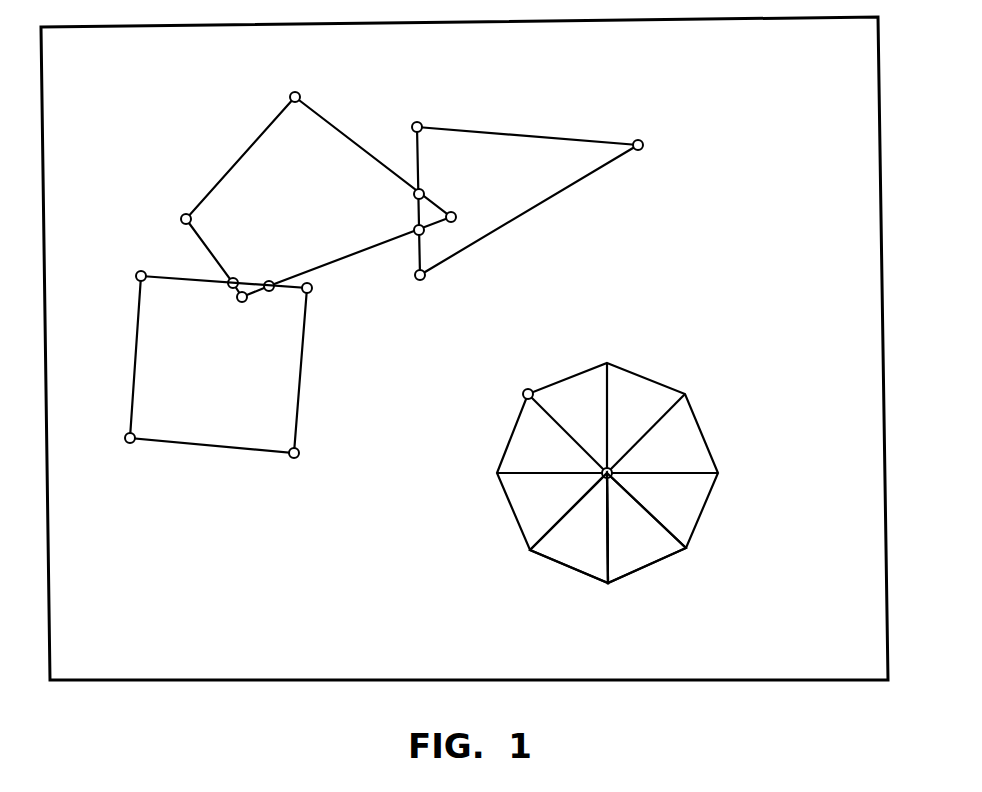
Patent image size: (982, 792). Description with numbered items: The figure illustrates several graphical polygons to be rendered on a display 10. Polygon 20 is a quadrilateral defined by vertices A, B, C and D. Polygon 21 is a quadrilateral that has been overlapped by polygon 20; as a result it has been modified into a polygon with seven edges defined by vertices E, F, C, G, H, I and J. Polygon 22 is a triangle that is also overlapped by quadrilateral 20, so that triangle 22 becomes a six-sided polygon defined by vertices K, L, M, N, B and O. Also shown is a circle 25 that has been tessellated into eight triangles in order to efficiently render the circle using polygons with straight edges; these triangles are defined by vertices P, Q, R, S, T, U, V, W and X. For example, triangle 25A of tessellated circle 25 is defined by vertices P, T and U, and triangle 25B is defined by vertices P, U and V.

The display 10 is at (745, 115).
The polygon 20 is at (287, 180).
The polygon 21 is at (205, 404).
The polygon 22 is at (502, 181).
The circle 25 is at (715, 520).
The triangle 25A is at (650, 553).
The triangle 25B is at (593, 553).